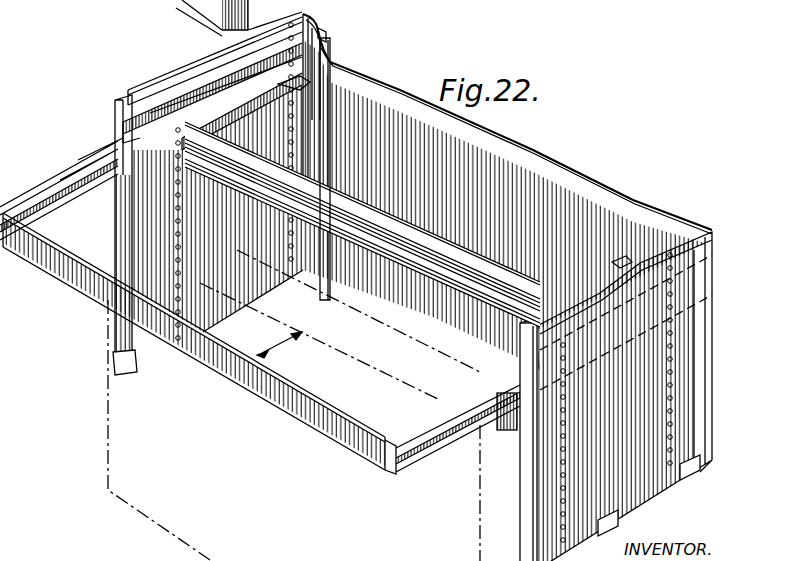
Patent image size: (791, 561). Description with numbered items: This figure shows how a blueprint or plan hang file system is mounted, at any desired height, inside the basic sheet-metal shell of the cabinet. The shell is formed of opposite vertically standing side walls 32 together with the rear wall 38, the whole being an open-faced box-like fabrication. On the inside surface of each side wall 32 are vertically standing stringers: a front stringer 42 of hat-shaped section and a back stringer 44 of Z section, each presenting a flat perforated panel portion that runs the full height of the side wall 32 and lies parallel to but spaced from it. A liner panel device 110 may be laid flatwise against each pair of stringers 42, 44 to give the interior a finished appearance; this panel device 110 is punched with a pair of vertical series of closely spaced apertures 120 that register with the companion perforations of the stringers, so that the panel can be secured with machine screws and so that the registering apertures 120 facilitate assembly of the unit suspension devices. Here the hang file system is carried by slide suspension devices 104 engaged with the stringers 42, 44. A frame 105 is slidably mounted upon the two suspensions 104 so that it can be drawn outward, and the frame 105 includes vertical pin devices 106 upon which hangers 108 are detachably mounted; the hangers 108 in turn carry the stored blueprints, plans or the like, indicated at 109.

The side wall 32 is at (207, 62).
The rear wall 38 is at (572, 174).
The front stringer 42 is at (125, 98).
The back stringer 44 is at (305, 37).
The slide suspension device 104 is at (334, 122).
The frame 105 is at (413, 252).
The vertical pin device 106 is at (70, 205).
The hanger 108 is at (382, 364).
The stored blueprints or plans 109 is at (130, 427).
The panel device 110 is at (286, 88).
The apertures 120 is at (343, 43).